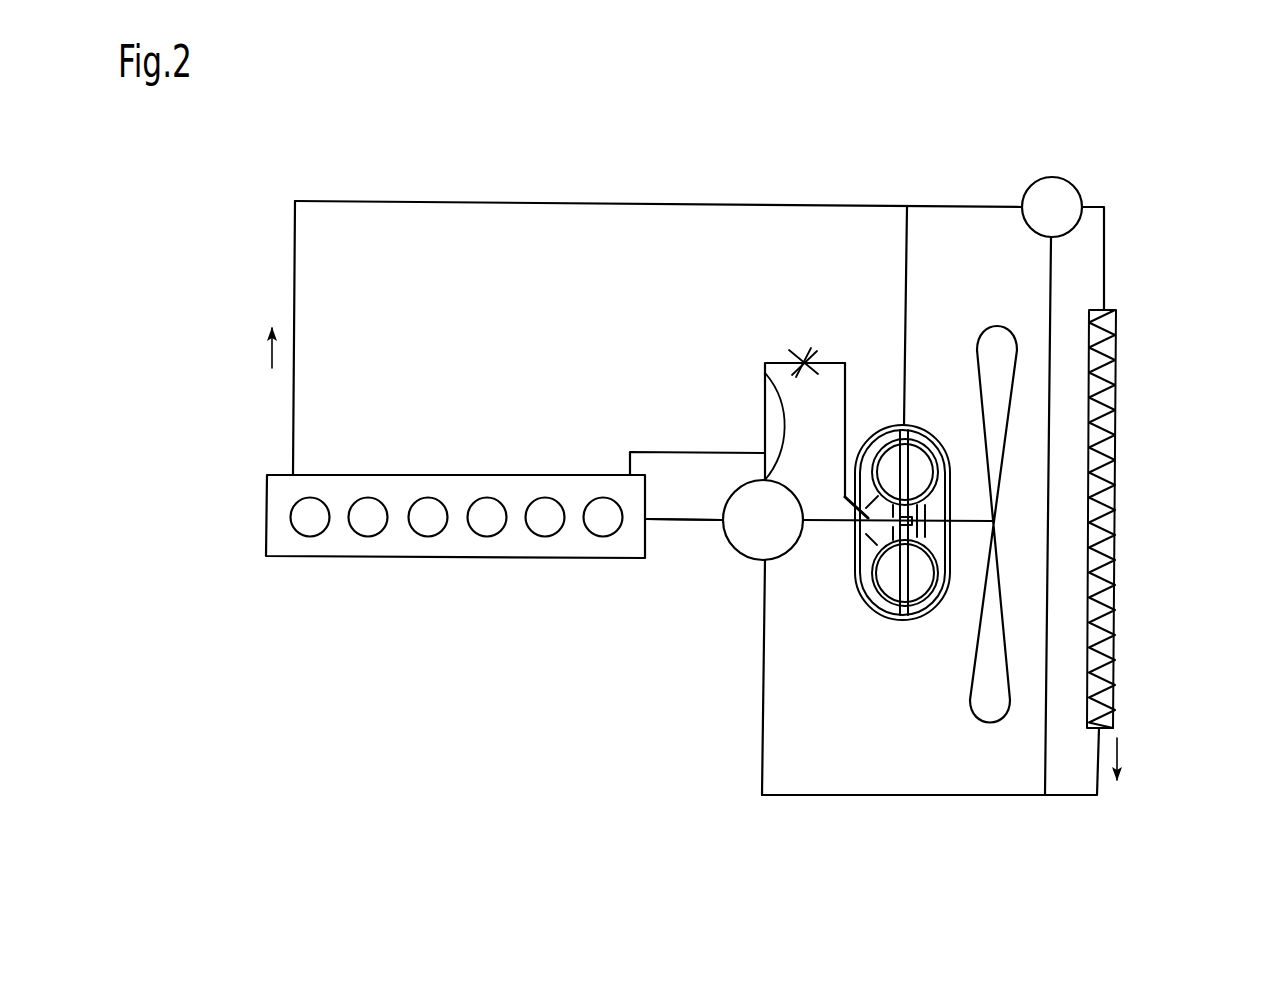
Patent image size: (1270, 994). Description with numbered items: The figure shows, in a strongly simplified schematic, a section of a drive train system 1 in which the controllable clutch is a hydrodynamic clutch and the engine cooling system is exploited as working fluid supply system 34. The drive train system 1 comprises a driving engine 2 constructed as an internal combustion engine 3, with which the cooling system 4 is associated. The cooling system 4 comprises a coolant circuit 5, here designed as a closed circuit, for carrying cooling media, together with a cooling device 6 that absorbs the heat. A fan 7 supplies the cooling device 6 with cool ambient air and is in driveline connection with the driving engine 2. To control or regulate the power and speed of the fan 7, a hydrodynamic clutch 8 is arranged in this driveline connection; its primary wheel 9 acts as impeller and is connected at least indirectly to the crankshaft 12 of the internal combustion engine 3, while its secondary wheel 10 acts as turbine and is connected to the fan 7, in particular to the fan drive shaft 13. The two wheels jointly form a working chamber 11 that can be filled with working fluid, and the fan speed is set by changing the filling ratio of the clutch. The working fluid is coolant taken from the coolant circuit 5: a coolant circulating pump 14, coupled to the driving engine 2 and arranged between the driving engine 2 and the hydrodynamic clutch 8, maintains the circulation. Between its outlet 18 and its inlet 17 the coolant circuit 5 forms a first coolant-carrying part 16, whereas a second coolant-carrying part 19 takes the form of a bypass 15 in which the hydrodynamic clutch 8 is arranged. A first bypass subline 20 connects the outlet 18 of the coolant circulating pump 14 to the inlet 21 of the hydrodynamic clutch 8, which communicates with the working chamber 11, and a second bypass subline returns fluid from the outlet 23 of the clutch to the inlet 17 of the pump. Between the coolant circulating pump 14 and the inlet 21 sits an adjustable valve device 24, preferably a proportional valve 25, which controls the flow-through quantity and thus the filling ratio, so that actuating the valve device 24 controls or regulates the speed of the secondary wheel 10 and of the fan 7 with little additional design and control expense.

The drive train system 1 is at (726, 192).
The driving engine 2 is at (455, 566).
The internal combustion engine 3 is at (335, 544).
The cooling system 4 is at (997, 809).
The coolant circuit 5 is at (1025, 797).
The cooling device 6 is at (1108, 616).
The fan 7 is at (984, 714).
The hydrodynamic clutch 8 is at (865, 606).
The primary wheel 9 is at (890, 443).
The secondary wheel 10 is at (920, 447).
The working chamber 11 is at (937, 480).
The crankshaft 12 is at (682, 522).
The fan drive shaft 13 is at (972, 523).
The coolant circulating pump 14 is at (734, 548).
The bypass 15 is at (830, 348).
The first coolant-carrying part 16 is at (763, 728).
The inlet 17 is at (766, 561).
The outlet 18 is at (766, 374).
The second coolant-carrying part 19 is at (818, 293).
The first bypass subline 20 is at (750, 398).
The inlet of the hydrodynamic clutch 21 is at (847, 512).
The outlet of the hydrodynamic clutch 23 is at (912, 420).
The valve device 24 is at (772, 300).
The proportional valve 25 is at (795, 348).
The working fluid supply system 34 is at (847, 805).